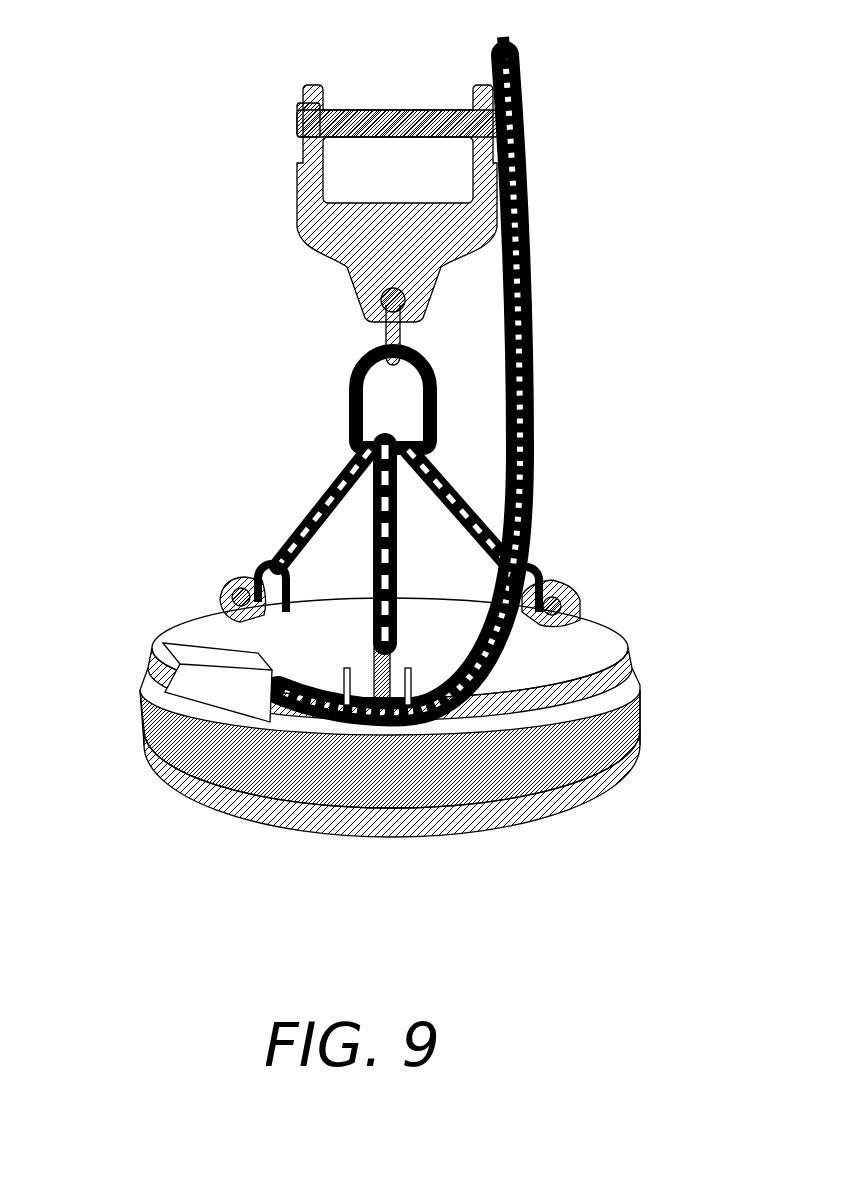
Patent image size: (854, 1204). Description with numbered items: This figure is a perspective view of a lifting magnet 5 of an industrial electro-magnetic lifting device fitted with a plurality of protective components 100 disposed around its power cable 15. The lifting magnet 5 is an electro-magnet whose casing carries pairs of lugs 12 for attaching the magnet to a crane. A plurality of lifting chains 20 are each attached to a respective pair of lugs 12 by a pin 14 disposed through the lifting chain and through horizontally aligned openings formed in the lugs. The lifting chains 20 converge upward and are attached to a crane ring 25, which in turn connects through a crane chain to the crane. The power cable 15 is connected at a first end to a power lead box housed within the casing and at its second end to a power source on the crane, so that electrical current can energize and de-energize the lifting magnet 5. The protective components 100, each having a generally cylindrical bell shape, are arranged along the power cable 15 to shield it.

The lifting magnet 5 is at (170, 497).
The lugs 12 is at (240, 574).
The pin 14 is at (228, 584).
The power cable 15 is at (510, 47).
The lifting chains 20 is at (305, 517).
The crane ring 25 is at (347, 389).
The protective component 100 is at (537, 262).